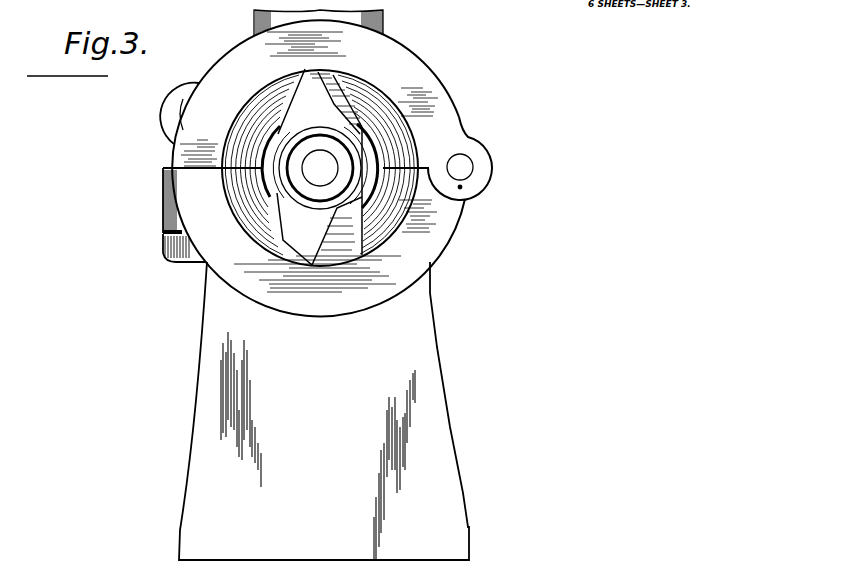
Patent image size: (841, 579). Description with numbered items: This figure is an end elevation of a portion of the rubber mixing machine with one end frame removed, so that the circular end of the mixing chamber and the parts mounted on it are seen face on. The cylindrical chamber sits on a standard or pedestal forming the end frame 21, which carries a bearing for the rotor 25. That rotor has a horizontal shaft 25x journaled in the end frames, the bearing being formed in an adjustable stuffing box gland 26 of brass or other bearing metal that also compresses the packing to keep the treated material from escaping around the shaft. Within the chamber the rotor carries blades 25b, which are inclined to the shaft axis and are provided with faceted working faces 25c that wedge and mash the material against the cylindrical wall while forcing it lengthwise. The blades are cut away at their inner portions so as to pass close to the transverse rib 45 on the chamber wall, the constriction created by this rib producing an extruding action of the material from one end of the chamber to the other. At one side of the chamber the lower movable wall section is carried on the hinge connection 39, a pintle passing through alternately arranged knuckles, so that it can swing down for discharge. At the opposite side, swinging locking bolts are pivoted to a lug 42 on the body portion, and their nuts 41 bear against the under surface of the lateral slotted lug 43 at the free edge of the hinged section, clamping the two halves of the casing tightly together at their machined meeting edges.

The end frame 21 is at (324, 411).
The rotor 25 is at (320, 168).
The blade 25b is at (353, 243).
The faceted working face 25c is at (333, 85).
The shaft 25x is at (342, 158).
The stuffing box gland 26 is at (458, 209).
The hinge connection 39 is at (460, 168).
The nut 41 is at (167, 249).
The lug 42 is at (166, 105).
The slotted lug 43 is at (170, 198).
The transverse rib 45 is at (390, 212).